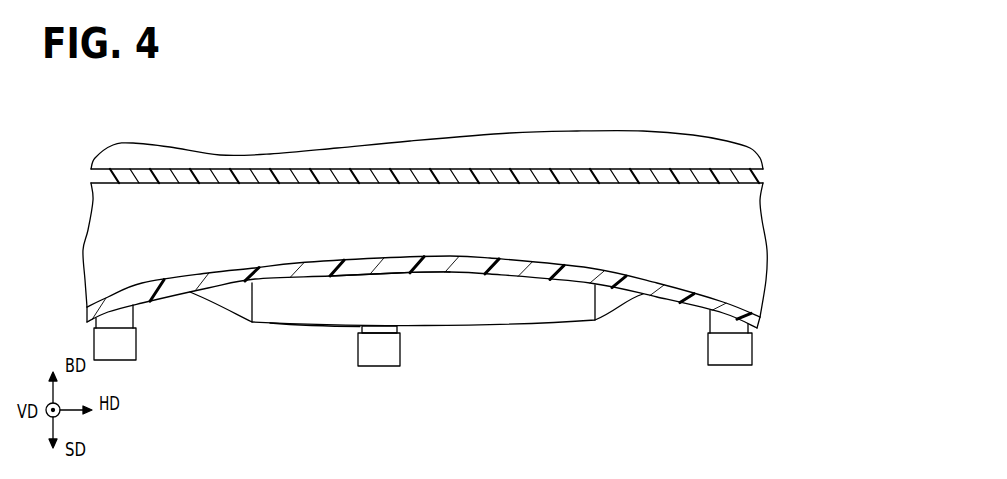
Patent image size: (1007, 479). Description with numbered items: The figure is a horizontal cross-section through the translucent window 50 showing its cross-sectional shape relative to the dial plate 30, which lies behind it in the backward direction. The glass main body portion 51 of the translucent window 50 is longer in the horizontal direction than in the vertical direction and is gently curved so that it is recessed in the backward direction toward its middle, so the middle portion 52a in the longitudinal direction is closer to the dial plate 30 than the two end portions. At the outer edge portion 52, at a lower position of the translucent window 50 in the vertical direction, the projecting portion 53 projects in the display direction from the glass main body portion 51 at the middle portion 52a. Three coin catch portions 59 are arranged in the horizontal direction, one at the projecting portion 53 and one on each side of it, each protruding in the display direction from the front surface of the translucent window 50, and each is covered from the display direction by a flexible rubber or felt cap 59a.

The dial plate 30 is at (567, 184).
The translucent window 50 is at (698, 288).
The glass main body portion 51 is at (525, 275).
The projecting portion 53 is at (283, 324).
The outer edge portion 52 is at (408, 348).
The middle portion 52a is at (373, 273).
The coin catch portion 59 is at (136, 315).
The cap 59a is at (136, 348).